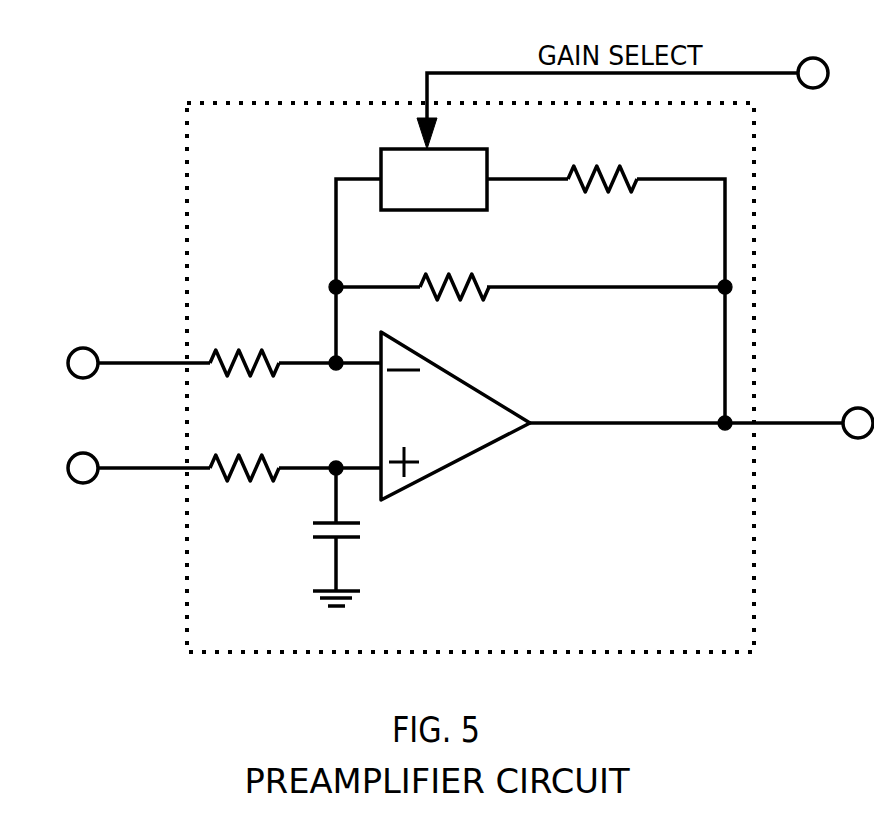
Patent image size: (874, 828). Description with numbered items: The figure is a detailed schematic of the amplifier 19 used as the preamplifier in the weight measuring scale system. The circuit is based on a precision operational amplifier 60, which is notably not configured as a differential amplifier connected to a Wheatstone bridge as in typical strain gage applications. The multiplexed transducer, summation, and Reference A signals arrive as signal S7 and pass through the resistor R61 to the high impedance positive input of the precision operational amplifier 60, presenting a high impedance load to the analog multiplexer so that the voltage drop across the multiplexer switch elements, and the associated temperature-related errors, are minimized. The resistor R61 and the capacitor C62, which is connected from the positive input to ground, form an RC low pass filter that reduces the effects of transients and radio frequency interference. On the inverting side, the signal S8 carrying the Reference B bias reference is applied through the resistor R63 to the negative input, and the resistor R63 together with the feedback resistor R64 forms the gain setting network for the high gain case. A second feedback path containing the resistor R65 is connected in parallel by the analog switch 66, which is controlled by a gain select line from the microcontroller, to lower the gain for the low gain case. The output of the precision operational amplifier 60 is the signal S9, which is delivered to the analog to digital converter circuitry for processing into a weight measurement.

The amplifier 19 is at (262, 103).
The analog switch 66 is at (413, 195).
The precision operational amplifier 60 is at (427, 431).
The resistor R65 is at (594, 172).
The resistor R64 is at (444, 280).
The resistor R63 is at (238, 355).
The resistor R61 is at (238, 462).
The capacitor C62 is at (323, 539).
The signal S8 is at (140, 361).
The signal S7 is at (140, 466).
The signal S9 is at (810, 421).